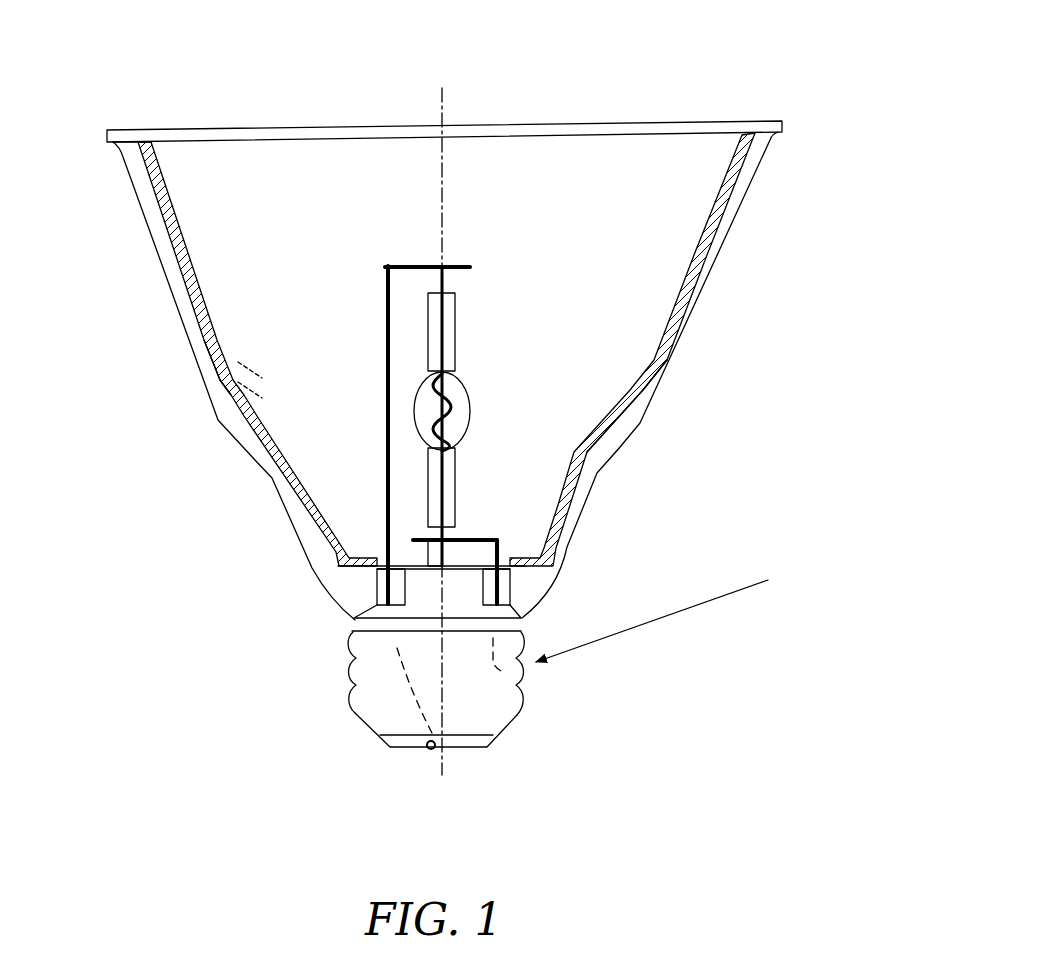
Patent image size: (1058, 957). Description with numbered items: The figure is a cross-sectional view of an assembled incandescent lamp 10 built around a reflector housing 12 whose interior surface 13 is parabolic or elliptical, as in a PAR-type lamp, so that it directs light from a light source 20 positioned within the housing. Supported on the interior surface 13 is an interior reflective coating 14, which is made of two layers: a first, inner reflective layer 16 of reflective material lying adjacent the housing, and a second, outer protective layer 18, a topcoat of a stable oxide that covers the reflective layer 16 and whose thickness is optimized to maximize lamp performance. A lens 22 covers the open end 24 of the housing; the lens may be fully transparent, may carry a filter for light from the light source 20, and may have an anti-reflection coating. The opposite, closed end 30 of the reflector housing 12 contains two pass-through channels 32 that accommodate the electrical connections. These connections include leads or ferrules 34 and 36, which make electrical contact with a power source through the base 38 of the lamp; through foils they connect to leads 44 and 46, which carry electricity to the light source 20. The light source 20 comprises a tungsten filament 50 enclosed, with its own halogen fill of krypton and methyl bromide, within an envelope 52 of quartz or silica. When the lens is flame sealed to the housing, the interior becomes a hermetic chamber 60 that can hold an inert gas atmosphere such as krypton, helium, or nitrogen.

The lamp 10 is at (150, 401).
The reflector housing 12 is at (240, 455).
The interior surface 13 is at (176, 242).
The interior reflective coating 14 is at (200, 313).
The reflective layer 16 is at (727, 205).
The protective layer 18 is at (700, 226).
The light source 20 is at (411, 410).
The lens 22 is at (751, 111).
The open end 24 is at (193, 147).
The closed end 30 is at (418, 607).
The pass-through channels 32 is at (518, 573).
The lead 34 is at (396, 511).
The lead 36 is at (506, 593).
The base 38 is at (483, 713).
The lead 44 is at (408, 266).
The lead 46 is at (468, 538).
The filament 50 is at (452, 434).
The envelope 52 is at (459, 377).
The hermetic chamber 60 is at (312, 238).